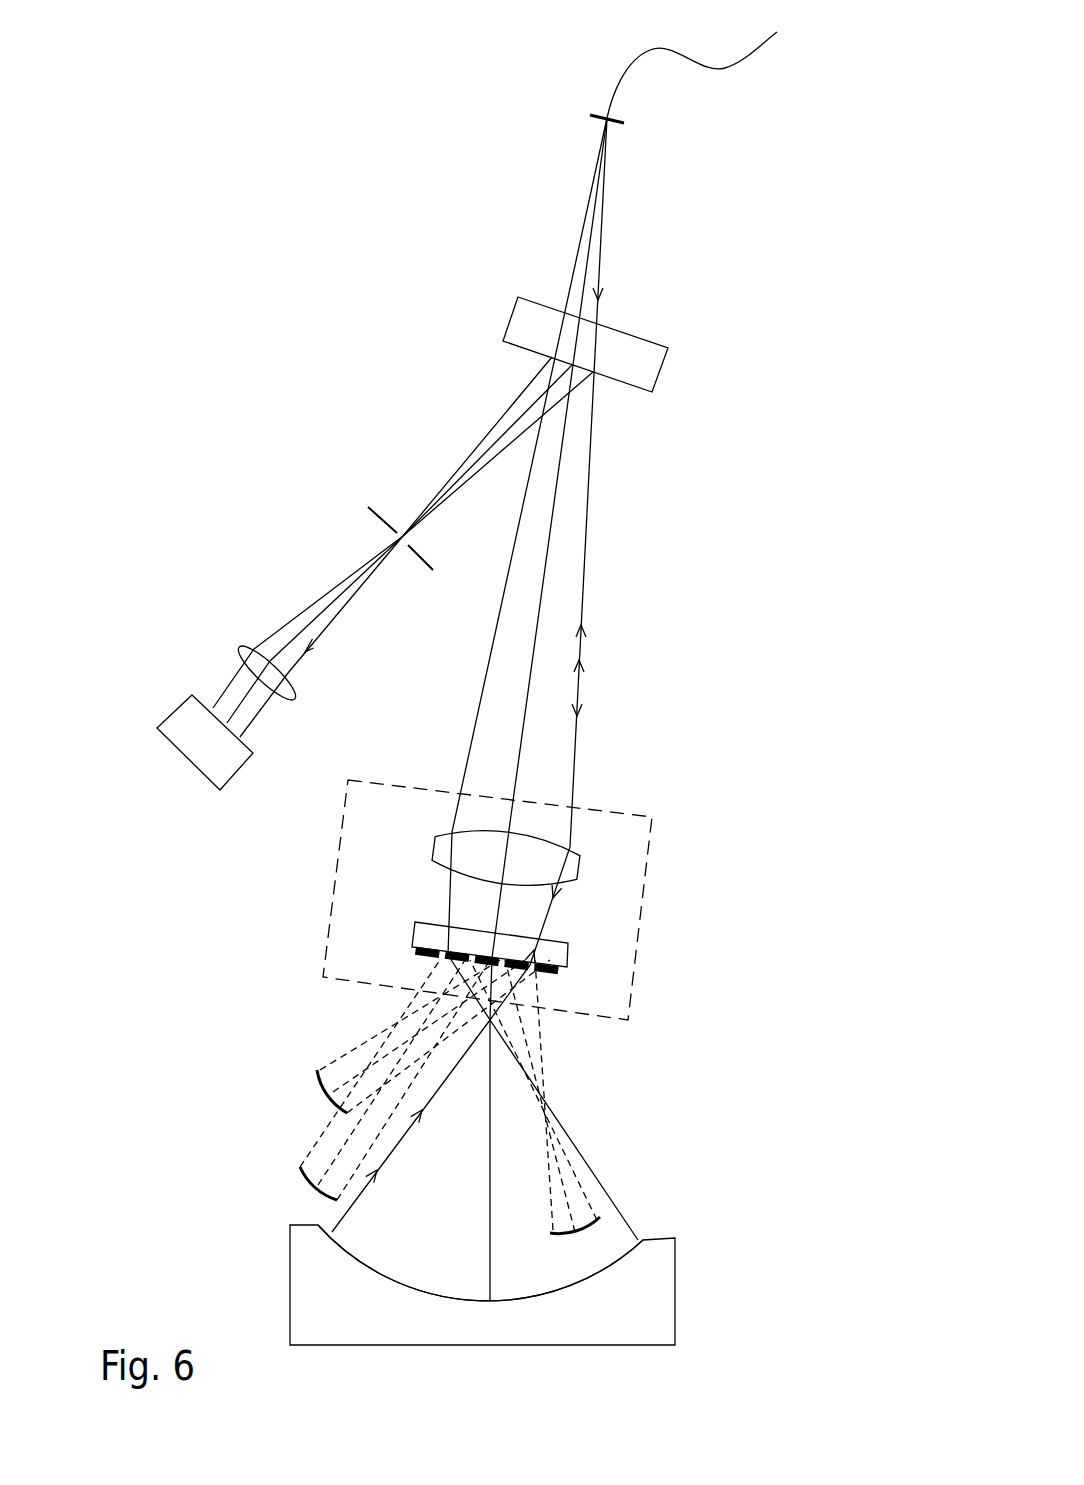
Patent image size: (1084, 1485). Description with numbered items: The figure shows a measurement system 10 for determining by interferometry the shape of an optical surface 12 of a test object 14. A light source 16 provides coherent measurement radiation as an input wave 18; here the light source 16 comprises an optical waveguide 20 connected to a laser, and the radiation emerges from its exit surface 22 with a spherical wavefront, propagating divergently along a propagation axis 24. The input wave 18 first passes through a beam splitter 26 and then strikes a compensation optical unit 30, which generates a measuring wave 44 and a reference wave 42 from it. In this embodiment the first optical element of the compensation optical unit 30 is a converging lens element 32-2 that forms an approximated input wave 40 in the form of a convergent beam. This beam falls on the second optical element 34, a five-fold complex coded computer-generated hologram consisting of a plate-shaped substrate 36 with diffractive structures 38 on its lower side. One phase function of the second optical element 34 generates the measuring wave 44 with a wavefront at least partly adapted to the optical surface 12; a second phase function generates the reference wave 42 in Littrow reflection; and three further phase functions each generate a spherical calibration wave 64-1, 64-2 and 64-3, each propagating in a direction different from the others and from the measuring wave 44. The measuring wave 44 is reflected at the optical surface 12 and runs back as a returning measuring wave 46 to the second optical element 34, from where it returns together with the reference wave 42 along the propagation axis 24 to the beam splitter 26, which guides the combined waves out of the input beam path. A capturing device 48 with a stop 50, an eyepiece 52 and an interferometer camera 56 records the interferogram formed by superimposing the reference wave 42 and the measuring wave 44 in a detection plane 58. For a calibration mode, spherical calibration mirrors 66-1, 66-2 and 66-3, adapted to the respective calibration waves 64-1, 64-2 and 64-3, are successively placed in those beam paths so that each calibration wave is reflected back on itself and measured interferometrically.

The measurement system 10 is at (417, 291).
The optical surface 12 is at (438, 1298).
The test object 14 is at (675, 1300).
The light source 16 is at (598, 58).
The input wave 18 is at (602, 233).
The optical waveguide 20 is at (723, 67).
The exit surface 22 is at (624, 122).
The propagation axis 24 is at (559, 468).
The beam splitter 26 is at (655, 377).
The compensation optical unit 30 is at (632, 813).
The converging lens element 32-2 is at (437, 853).
The second optical element 34 is at (568, 967).
The substrate 36 is at (413, 937).
The diffractive structures 38 is at (417, 965).
The approximated input wave 40 is at (562, 898).
The reference wave 42 is at (586, 633).
The measuring wave 44 is at (422, 1113).
The returning measuring wave 46 is at (585, 668).
The capturing device 48 is at (212, 632).
The stop 50 is at (366, 513).
The eyepiece 52 is at (295, 688).
The interferometer camera 56 is at (188, 763).
The detection plane 58 is at (247, 742).
The calibration wave 64-1 is at (567, 1064).
The calibration wave 64-2 is at (320, 1053).
The calibration wave 64-3 is at (301, 1152).
The calibration mirror 66-1 is at (600, 1230).
The calibration mirror 66-2 is at (317, 1080).
The calibration mirror 66-3 is at (303, 1173).